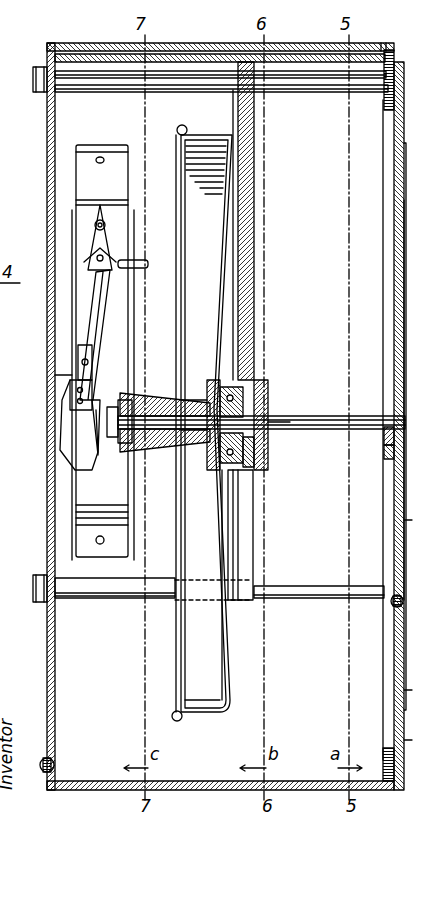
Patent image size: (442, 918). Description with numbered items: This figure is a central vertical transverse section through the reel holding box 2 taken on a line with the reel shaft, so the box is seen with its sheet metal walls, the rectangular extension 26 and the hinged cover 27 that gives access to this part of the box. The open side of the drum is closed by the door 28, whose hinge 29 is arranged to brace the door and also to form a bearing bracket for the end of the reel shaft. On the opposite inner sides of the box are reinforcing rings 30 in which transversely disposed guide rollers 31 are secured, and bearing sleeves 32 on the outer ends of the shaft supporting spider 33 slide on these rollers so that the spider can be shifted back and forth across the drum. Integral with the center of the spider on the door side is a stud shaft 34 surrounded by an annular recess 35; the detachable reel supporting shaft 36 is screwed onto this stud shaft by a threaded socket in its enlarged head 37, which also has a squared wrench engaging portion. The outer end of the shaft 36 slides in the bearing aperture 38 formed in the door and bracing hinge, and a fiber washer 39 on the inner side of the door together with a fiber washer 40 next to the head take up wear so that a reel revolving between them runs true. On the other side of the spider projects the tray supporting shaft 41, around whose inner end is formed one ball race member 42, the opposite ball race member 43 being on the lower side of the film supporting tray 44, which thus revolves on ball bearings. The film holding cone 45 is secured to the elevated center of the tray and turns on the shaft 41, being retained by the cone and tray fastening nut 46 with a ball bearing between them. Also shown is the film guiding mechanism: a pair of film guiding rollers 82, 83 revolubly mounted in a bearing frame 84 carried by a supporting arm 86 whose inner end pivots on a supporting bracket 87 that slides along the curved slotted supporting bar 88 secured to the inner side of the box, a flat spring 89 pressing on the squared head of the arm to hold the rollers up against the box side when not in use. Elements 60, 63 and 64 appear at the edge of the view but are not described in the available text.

The box 2 is at (48, 373).
The rectangular extension 26 is at (48, 163).
The hinged cover 27 is at (327, 62).
The door 28 is at (398, 117).
The hinge 29 is at (398, 330).
The reinforcing rings 30 is at (47, 102).
The guide rollers 31 is at (292, 88).
The bearing sleeves 32 is at (121, 95).
The shaft supporting spider 33 is at (255, 305).
The stud shaft 34 is at (268, 400).
The annular recess 35 is at (262, 452).
The reel supporting shaft 36 is at (330, 436).
The enlarged head 37 is at (214, 380).
The bearing aperture 38 is at (396, 432).
The fiber washer 39 is at (388, 448).
The fiber washer 40 is at (290, 425).
The tray supporting shaft 41 is at (183, 393).
The ball race member 42 is at (220, 465).
The ball race member 43 is at (213, 345).
The film supporting tray 44 is at (202, 710).
The film holding cone 45 is at (148, 452).
The cone and tray fastening nut 46 is at (108, 425).
The bolt 60 is at (416, 600).
The wall flange 63 is at (423, 607).
The wall flange 64 is at (423, 746).
The film guiding roller 82 is at (70, 405).
The film guiding roller 83 is at (70, 385).
The bearing frame 84 is at (78, 352).
The supporting arm 86 is at (106, 326).
The supporting bracket 87 is at (112, 232).
The slotted supporting bar 88 is at (128, 378).
The flat spring 89 is at (140, 268).